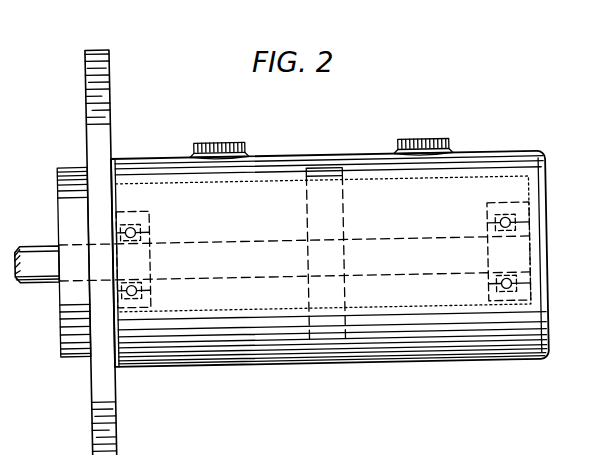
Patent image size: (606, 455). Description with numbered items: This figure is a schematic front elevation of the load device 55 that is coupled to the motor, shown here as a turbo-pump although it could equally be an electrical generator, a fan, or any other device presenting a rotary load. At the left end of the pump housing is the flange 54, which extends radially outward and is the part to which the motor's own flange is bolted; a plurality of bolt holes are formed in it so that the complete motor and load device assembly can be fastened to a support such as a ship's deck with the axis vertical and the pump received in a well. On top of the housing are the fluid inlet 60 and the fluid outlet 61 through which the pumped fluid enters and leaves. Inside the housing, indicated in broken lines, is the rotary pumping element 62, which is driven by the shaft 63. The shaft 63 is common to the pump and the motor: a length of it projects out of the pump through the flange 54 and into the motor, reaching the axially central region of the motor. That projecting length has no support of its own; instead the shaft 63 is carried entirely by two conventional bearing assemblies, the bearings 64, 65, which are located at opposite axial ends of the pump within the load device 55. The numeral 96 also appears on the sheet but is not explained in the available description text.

The mounting plate 54 is at (90, 86).
The cylindrical housing 55 is at (145, 160).
The fitting 60 is at (225, 141).
The fitting 61 is at (430, 140).
The partition 62 is at (348, 210).
The shaft bore 63 is at (233, 242).
The bearing assembly 64 is at (490, 213).
The bearing assembly 65 is at (151, 217).
The lower component 96 is at (294, 444).